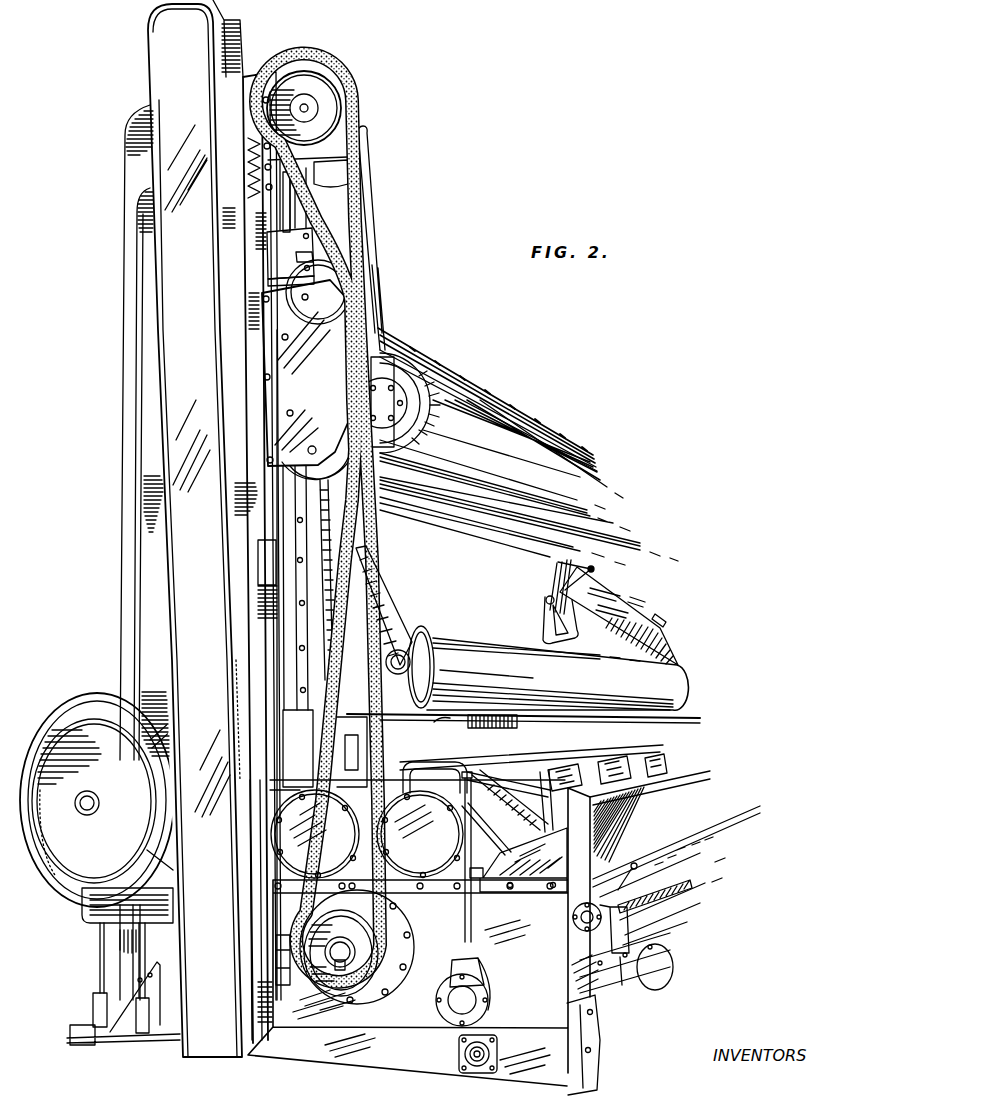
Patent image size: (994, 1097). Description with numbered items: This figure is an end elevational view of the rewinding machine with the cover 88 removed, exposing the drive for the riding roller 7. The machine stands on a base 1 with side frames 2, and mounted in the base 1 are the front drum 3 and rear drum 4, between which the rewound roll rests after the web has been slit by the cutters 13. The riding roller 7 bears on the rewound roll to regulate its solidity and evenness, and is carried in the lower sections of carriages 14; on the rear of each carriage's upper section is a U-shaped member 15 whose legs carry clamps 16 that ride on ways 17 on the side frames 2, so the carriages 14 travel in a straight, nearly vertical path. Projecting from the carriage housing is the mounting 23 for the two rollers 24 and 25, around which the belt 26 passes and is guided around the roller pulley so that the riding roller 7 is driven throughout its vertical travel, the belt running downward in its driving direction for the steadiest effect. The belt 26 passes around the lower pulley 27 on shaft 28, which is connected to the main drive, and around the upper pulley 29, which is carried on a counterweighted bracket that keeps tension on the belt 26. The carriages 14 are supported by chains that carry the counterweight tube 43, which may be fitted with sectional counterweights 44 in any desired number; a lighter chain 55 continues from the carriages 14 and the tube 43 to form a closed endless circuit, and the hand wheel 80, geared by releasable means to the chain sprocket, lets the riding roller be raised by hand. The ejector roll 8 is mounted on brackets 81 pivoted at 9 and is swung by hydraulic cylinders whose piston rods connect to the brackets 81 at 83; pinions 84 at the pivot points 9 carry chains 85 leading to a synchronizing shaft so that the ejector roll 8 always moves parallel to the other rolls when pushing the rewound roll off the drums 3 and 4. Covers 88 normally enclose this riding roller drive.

The base 1 is at (504, 933).
The side frames 2 is at (250, 78).
The front drum 3 is at (612, 748).
The rear drum 4 is at (553, 753).
The riding roller 7 is at (517, 446).
The ejector roll 8 is at (523, 674).
The pivot 9 is at (546, 601).
The cutters 13 is at (598, 880).
The carriages 14 is at (306, 258).
The U-shaped member 15 is at (318, 247).
The clamps 16 is at (283, 279).
The ways 17 is at (287, 198).
The mounting 23 is at (306, 373).
The roller 24 is at (340, 300).
The roller 25 is at (340, 447).
The belt 26 is at (358, 168).
The lower pulley 27 is at (355, 989).
The shaft 28 is at (337, 955).
The upper pulley 29 is at (328, 84).
The counterweight tube 43 is at (443, 717).
The sectional counterweights 44 is at (503, 727).
The lighter chain 55 is at (330, 527).
The hand wheel 80 is at (88, 698).
The brackets 81 is at (393, 598).
The connection point 83 is at (592, 569).
The pinions 84 is at (548, 605).
The chains 85 is at (553, 568).
The covers 88 is at (157, 68).